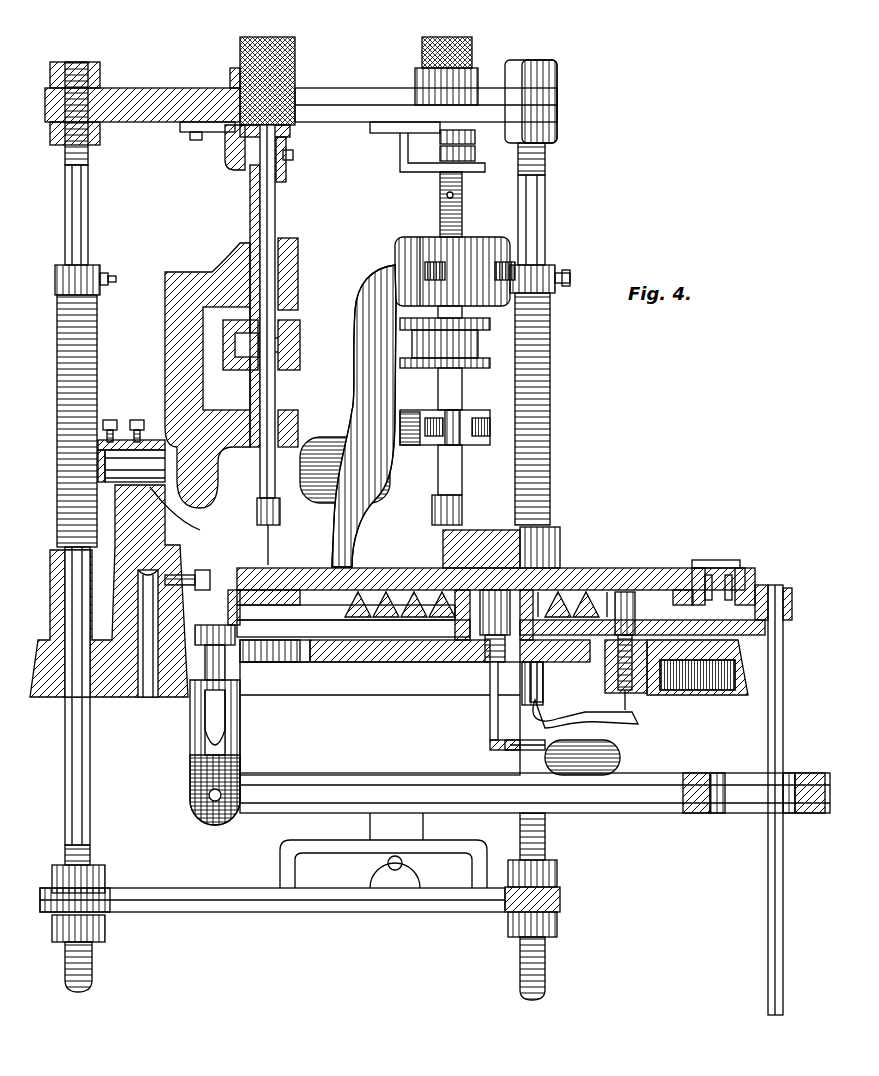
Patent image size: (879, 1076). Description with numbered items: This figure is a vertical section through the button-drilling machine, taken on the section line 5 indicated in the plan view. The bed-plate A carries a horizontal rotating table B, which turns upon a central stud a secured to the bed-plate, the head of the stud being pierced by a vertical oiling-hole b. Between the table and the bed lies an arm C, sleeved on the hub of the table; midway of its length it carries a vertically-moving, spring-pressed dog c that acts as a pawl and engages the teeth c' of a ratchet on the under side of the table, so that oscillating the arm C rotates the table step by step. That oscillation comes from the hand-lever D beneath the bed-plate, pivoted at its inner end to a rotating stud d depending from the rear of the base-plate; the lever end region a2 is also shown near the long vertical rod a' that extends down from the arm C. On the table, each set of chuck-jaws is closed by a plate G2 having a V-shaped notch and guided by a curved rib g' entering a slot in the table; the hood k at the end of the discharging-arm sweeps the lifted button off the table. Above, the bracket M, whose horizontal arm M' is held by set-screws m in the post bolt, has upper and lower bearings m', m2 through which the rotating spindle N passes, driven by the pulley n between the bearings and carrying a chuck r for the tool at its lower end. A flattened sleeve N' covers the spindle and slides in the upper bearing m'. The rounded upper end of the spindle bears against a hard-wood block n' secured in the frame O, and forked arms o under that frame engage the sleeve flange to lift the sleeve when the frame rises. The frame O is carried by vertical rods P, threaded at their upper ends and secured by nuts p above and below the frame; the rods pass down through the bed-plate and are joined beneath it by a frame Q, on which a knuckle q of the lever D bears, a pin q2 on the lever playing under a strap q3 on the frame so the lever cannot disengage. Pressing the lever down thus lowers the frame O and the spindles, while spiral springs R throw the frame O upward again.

The frame O is at (360, 92).
The block n' is at (262, 67).
The vertical rod P is at (88, 242).
The nut p is at (92, 92).
The spiral spring R is at (57, 404).
The frame base 5 is at (103, 591).
The bracket M is at (188, 375).
The horizontal arm M' is at (185, 513).
The set-screw m is at (131, 436).
The pulley n is at (273, 345).
The upper bearing m' is at (306, 274).
The lower bearing m2 is at (293, 430).
The sleeve N' is at (252, 286).
The arm o is at (232, 164).
The spindle N is at (253, 311).
The chuck r is at (280, 520).
The rotating table B is at (403, 566).
The central stud a is at (481, 537).
The oiling-hole b is at (542, 534).
The bed-plate A is at (420, 688).
The ratchet teeth c' is at (346, 606).
The dog c is at (642, 613).
The arm C is at (757, 638).
The plate G2 is at (750, 566).
The curved rib g' is at (779, 588).
The hood k is at (575, 568).
The vertical rod a' is at (787, 800).
The hand-lever D is at (440, 756).
The beam end bearing a2 is at (770, 797).
The rotating stud d is at (243, 771).
The frame Q is at (335, 918).
The strap q3 is at (287, 852).
The knuckle q is at (388, 864).
The pin q2 is at (415, 863).